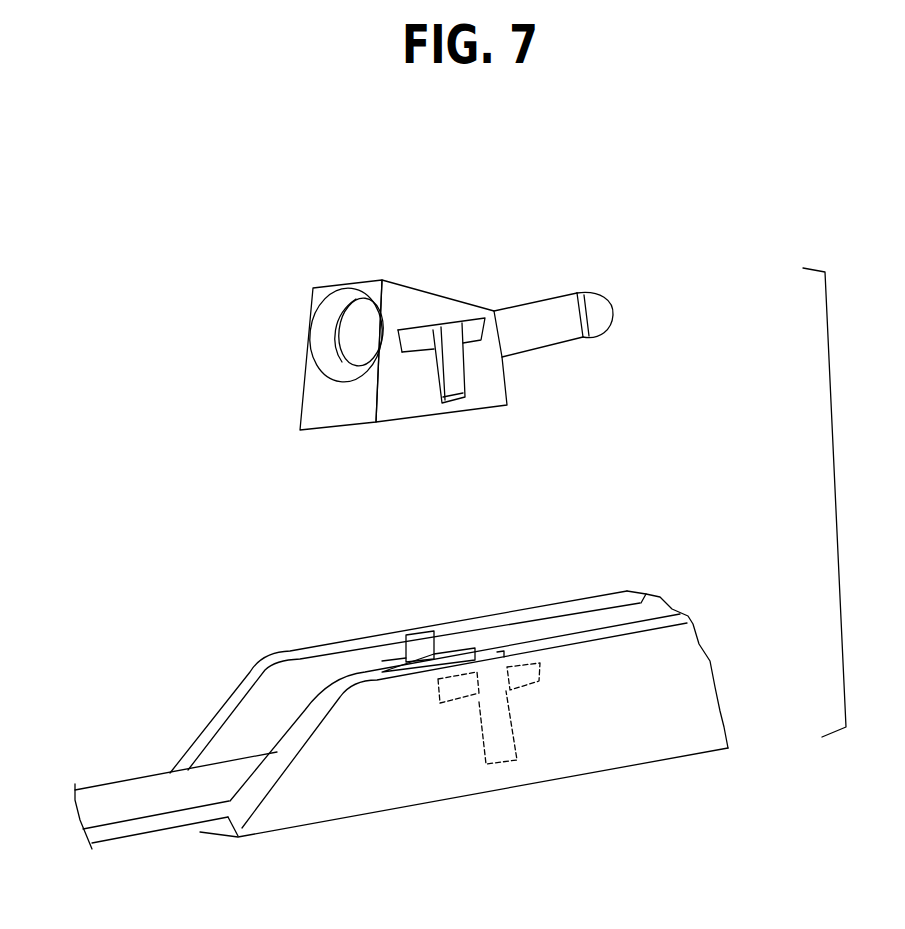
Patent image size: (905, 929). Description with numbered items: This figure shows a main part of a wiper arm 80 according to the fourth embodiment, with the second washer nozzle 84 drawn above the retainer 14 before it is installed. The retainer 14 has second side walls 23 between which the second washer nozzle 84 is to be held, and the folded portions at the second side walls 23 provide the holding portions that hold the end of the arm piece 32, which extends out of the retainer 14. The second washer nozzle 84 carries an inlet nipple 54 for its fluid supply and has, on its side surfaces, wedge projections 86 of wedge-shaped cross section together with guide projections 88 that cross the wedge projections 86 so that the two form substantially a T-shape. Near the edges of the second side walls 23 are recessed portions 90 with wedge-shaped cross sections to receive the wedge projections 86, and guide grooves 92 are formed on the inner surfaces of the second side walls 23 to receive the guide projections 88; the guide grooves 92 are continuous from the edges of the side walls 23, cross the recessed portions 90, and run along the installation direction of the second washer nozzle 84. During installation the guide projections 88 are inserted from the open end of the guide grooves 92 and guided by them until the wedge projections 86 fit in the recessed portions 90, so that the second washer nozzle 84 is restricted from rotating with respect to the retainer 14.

The retainer 14 is at (417, 808).
The second side walls 23 is at (232, 703).
The arm piece 32 is at (118, 793).
The inlet nipple 54 is at (542, 312).
The wiper arm 80 is at (200, 485).
The second washer nozzle 84 is at (369, 282).
The wedge projections 86 is at (418, 328).
The guide projections 88 is at (460, 405).
The recessed portions 90 is at (470, 703).
The guide grooves 92 is at (418, 632).